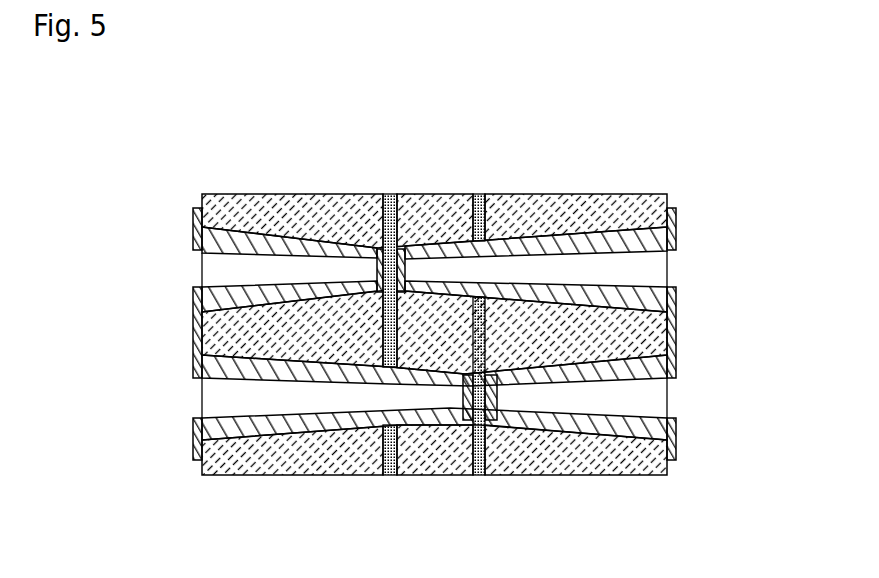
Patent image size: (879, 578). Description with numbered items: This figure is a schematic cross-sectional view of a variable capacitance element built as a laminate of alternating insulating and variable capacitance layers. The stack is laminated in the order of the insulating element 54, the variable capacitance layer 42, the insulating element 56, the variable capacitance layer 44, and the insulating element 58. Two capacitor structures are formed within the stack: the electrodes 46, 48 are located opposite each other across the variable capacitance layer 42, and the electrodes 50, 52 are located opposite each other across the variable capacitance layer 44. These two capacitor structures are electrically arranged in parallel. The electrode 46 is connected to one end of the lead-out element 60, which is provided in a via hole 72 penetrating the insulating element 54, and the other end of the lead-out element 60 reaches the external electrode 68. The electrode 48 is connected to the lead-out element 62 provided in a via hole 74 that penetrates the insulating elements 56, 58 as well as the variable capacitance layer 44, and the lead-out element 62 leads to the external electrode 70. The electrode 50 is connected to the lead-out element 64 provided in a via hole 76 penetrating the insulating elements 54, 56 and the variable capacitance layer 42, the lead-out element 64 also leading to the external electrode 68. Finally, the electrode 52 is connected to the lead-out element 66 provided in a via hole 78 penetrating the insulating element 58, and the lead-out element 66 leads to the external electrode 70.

The variable capacitance layer 42 is at (390, 194).
The variable capacitance layer 44 is at (478, 194).
The electrode 46 is at (378, 248).
The electrode 48 is at (402, 248).
The electrode 50 is at (467, 422).
The electrode 52 is at (492, 420).
The insulating element 54 is at (230, 202).
The insulating element 56 is at (413, 475).
The insulating element 58 is at (638, 202).
The lead-out element 60 is at (310, 247).
The lead-out element 62 is at (558, 245).
The lead-out element 64 is at (313, 420).
The lead-out element 66 is at (578, 417).
The external electrode 68 is at (193, 337).
The external electrode 70 is at (676, 330).
The via hole 72 is at (215, 272).
The via hole 74 is at (652, 270).
The via hole 76 is at (215, 395).
The via hole 78 is at (652, 398).